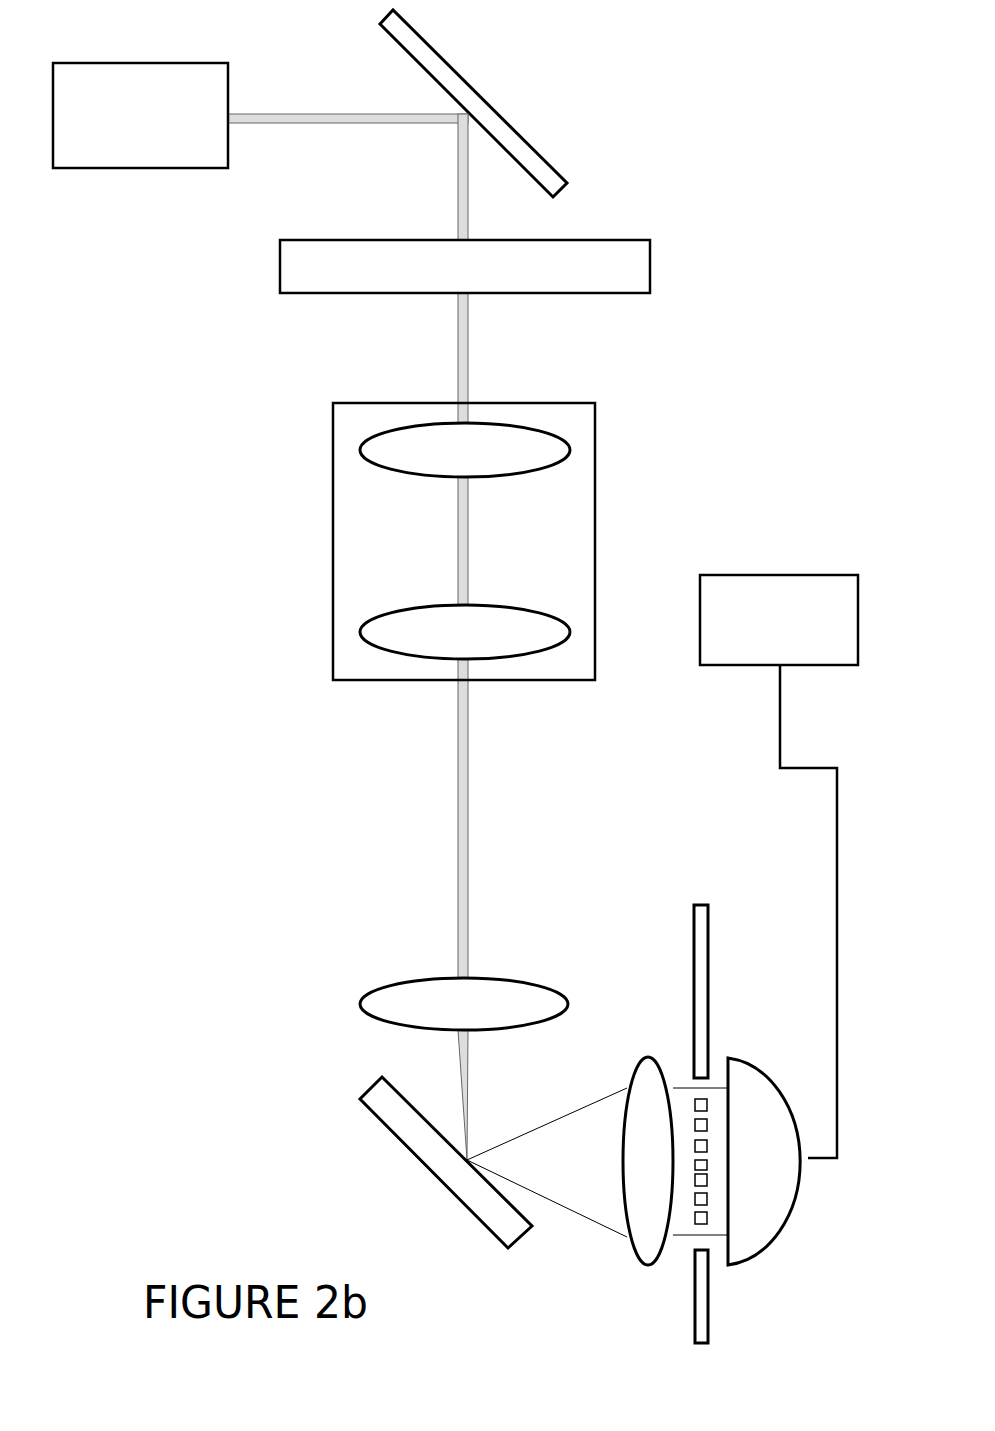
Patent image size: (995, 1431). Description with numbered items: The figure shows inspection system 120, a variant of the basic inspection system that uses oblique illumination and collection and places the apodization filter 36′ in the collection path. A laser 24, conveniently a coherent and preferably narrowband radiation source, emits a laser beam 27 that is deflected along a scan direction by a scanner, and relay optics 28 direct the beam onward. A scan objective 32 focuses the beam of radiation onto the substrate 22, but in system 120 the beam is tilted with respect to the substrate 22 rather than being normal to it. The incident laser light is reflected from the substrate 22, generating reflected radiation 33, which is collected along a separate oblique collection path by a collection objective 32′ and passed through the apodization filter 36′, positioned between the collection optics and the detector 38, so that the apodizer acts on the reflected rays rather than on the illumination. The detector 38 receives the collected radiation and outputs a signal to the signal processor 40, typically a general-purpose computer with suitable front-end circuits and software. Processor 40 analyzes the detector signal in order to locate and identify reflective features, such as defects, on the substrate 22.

The system 120 is at (176, 1242).
The substrate 22 is at (446, 1162).
The laser 24 is at (140, 115).
The laser beam 27 is at (462, 183).
The relay optics 28 is at (280, 435).
The scan objective 32 is at (538, 987).
The collection lens 32′ is at (650, 1057).
The reflected radiation 33 is at (597, 1162).
The apodization filter 36′ is at (688, 907).
The detector 38 is at (746, 1040).
The signal processor 40 is at (779, 866).